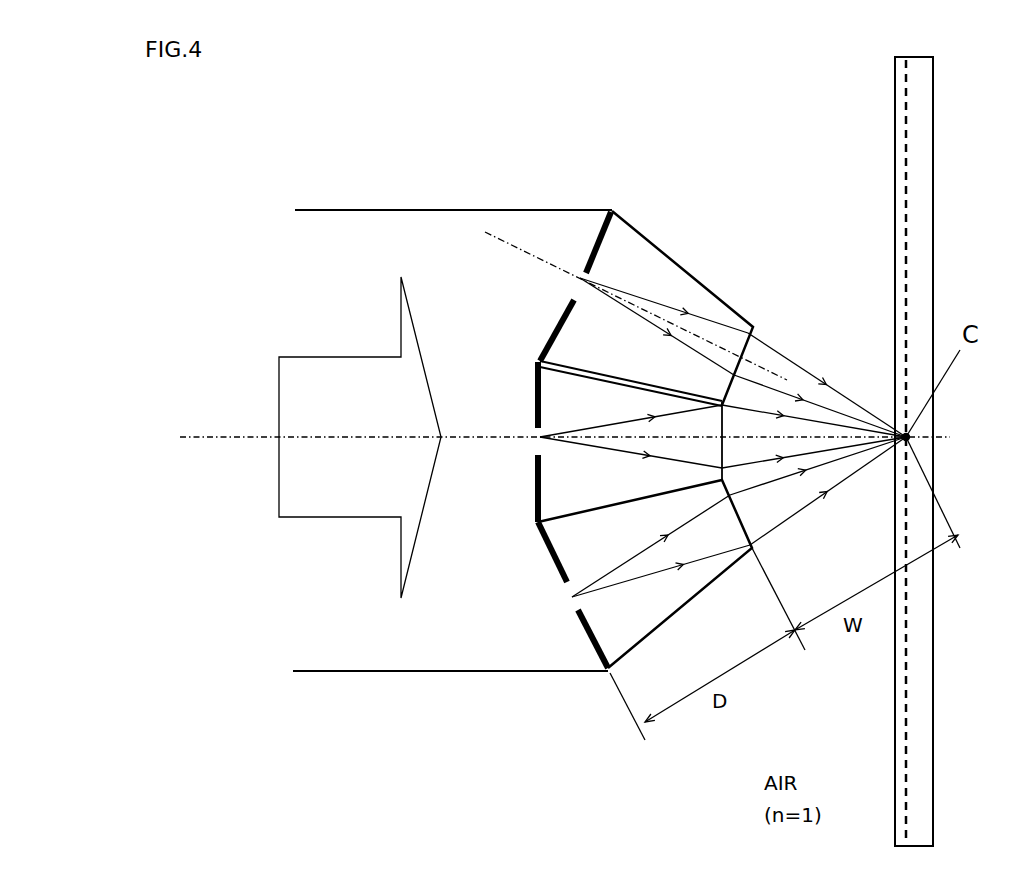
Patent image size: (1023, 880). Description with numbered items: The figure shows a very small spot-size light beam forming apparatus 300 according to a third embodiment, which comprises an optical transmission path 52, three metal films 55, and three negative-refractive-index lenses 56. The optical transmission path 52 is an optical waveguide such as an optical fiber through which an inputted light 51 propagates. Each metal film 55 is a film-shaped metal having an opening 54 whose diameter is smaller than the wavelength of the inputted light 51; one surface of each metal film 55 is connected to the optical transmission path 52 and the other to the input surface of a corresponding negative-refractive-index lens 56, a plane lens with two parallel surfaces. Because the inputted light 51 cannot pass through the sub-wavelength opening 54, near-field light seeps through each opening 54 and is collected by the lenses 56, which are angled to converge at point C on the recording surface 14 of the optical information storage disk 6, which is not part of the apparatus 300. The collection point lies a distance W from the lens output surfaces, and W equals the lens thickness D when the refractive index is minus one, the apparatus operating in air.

The very small spot-size light beam forming apparatus 300 is at (829, 124).
The inputted light 51 is at (408, 382).
The optical transmission path 52 is at (344, 653).
The opening 54 is at (578, 262).
The metal film 55 is at (603, 228).
The negative-refractive-index lens 56 is at (647, 262).
The optical information storage disk 6 is at (927, 165).
The recording surface 14 is at (907, 800).